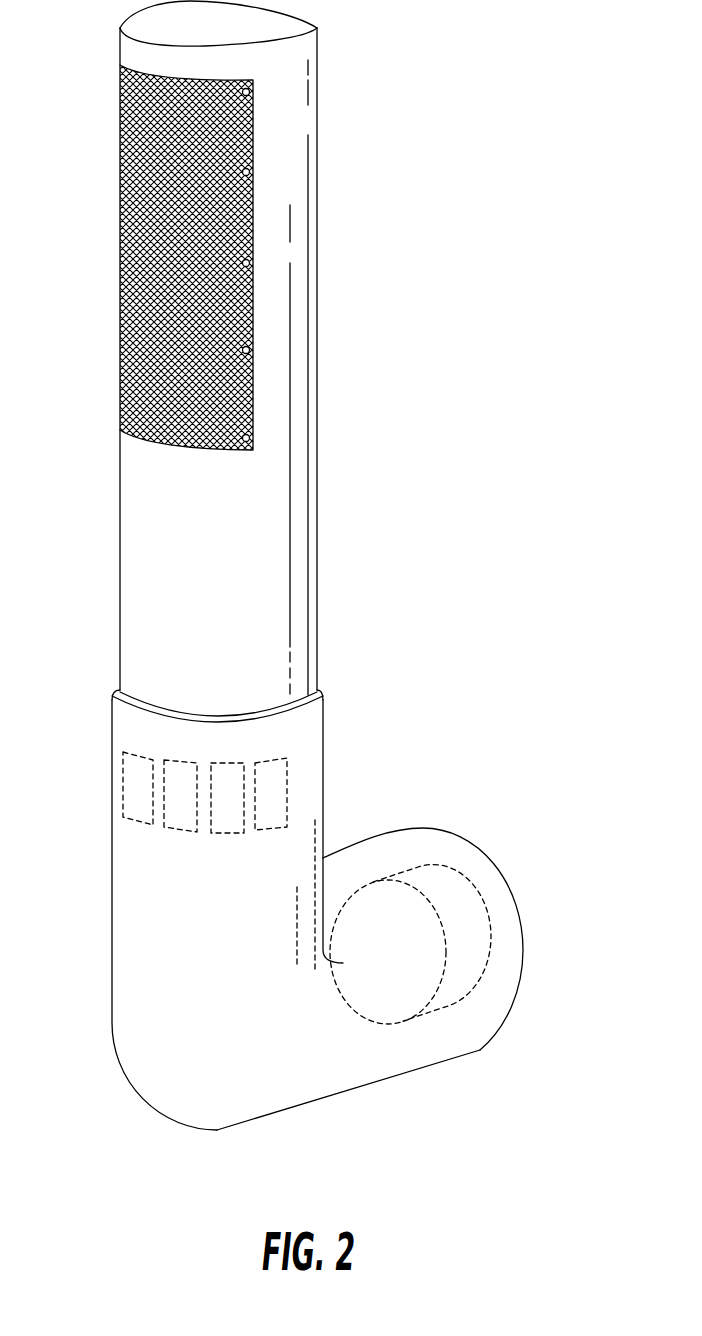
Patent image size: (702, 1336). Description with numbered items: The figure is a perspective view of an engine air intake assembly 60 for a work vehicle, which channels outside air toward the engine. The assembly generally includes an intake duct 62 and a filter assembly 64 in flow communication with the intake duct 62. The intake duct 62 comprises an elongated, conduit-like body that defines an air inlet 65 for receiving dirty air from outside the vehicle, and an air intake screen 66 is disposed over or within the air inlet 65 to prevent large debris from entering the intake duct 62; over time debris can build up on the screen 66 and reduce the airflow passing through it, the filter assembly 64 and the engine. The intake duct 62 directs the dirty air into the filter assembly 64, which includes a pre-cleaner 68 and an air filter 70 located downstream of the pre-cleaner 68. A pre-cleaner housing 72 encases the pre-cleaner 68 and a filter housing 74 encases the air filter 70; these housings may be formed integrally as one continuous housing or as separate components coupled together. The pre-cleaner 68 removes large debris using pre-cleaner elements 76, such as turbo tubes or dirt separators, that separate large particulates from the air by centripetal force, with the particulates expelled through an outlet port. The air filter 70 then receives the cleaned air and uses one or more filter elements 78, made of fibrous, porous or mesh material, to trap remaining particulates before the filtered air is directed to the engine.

The engine air intake assembly 60 is at (488, 284).
The intake duct 62 is at (106, 397).
The filter assembly 64 is at (360, 802).
The air inlet 65 is at (253, 225).
The air intake screen 66 is at (126, 210).
The pre-cleaner 68 is at (146, 865).
The air filter 70 is at (496, 1007).
The pre-cleaner housing 72 is at (112, 722).
The filter housing 74 is at (348, 1093).
The pre-cleaner elements 76 is at (153, 796).
The filter elements 78 is at (497, 937).